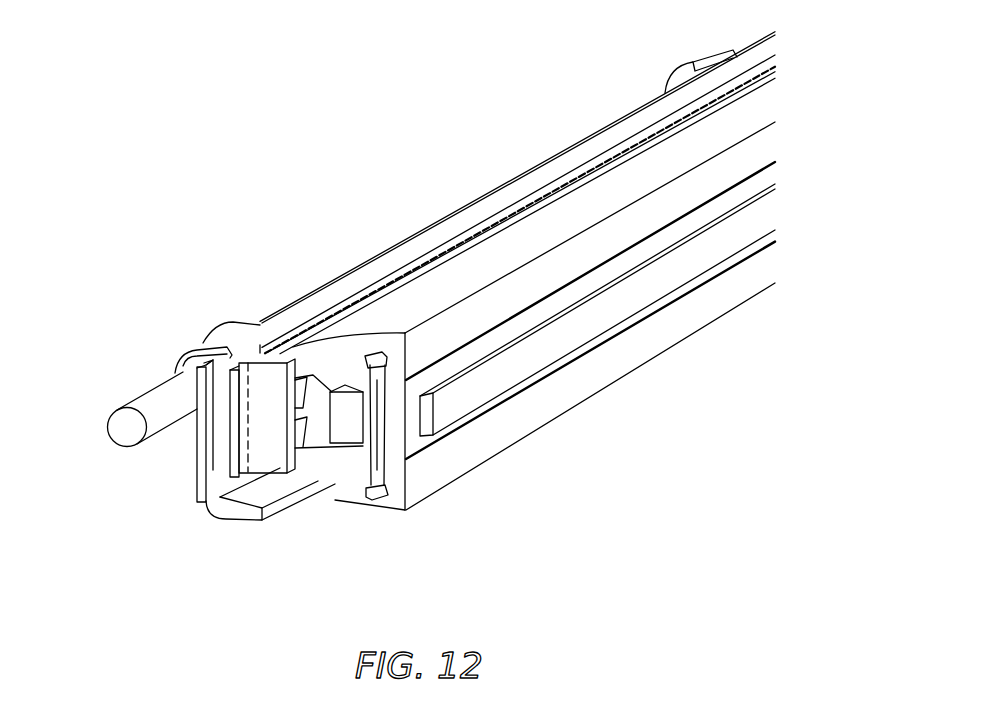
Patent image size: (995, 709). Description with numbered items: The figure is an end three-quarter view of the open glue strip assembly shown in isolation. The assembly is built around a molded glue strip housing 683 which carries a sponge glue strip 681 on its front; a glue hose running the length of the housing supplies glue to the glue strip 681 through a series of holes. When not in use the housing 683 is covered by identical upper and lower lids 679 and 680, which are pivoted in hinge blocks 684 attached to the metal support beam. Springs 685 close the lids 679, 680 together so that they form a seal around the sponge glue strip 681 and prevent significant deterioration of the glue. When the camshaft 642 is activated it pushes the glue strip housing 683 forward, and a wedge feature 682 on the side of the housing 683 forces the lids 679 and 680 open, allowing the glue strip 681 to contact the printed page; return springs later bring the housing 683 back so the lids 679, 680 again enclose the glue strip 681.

The camshaft 642 is at (165, 400).
The upper lid 679 is at (493, 257).
The lower lid 680 is at (653, 342).
The sponge glue strip 681 is at (541, 350).
The wedge feature 682 is at (358, 430).
The glue strip housing 683 is at (400, 428).
The hinge blocks 684 is at (272, 458).
The springs 685 is at (380, 452).